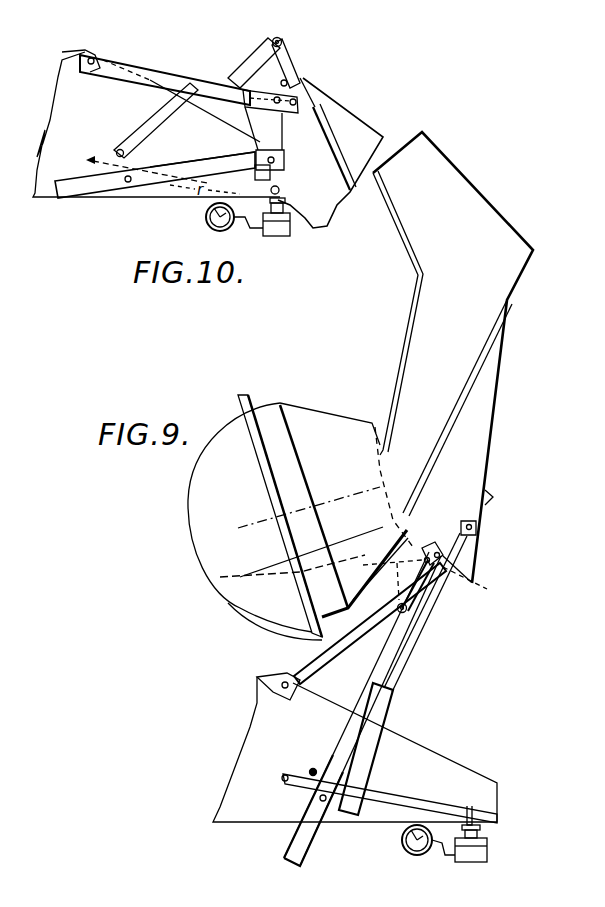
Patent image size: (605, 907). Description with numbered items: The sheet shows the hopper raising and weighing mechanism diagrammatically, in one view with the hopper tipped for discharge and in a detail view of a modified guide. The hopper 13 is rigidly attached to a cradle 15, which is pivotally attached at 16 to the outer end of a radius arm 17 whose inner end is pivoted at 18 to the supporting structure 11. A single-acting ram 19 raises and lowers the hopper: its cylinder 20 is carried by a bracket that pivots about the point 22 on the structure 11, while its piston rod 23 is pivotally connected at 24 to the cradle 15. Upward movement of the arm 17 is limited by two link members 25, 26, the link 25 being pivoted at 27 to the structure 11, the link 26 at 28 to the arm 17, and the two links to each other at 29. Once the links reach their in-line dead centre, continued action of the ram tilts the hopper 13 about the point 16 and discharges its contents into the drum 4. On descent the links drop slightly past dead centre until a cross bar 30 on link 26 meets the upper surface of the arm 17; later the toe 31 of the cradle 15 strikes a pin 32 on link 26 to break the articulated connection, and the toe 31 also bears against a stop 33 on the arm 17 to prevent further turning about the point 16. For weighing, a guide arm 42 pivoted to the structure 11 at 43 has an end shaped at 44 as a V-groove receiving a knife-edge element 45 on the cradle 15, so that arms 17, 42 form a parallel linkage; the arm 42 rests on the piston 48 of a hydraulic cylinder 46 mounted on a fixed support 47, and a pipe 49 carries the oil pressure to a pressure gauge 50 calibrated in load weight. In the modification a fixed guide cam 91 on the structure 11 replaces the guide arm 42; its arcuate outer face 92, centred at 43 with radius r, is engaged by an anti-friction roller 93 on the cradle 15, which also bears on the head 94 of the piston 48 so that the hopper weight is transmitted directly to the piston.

In FIG. 9, the drum 4 is at (215, 567).
In FIG. 10, the supporting structure 11 is at (60, 126).
In FIG. 9, the supporting structure 11 is at (403, 752).
In FIG. 10, the hopper 13 is at (340, 117).
In FIG. 9, the hopper 13 is at (513, 257).
In FIG. 10, the cradle 15 is at (325, 150).
In FIG. 10, the pivot point 16 is at (294, 106).
In FIG. 9, the pivot point 16 is at (440, 547).
In FIG. 10, the radius arm 17 is at (176, 82).
In FIG. 9, the radius arm 17 is at (333, 644).
In FIG. 10, the pivot point 18 is at (96, 56).
In FIG. 9, the pivot point 18 is at (262, 686).
In FIG. 10, the ram 19 is at (77, 192).
In FIG. 9, the ram 19 is at (352, 773).
In FIG. 9, the cylinder 20 is at (304, 854).
In FIG. 10, the pivot point 22 is at (128, 183).
In FIG. 9, the pivot point 22 is at (325, 801).
In FIG. 9, the piston rod 23 is at (410, 640).
In FIG. 10, the pivot point 24 is at (280, 161).
In FIG. 9, the pivot point 24 is at (478, 531).
In FIG. 10, the link member 25 is at (244, 66).
In FIG. 9, the link member 25 is at (386, 650).
In FIG. 10, the link member 26 is at (288, 68).
In FIG. 9, the link member 26 is at (410, 602).
In FIG. 10, the pivot point 27 is at (118, 151).
In FIG. 9, the pivot point 27 is at (310, 770).
In FIG. 10, the pivot point 28 is at (277, 103).
In FIG. 9, the pivot point 28 is at (427, 557).
In FIG. 10, the pivot point 29 is at (282, 38).
In FIG. 9, the pivot point 29 is at (407, 611).
In FIG. 9, the cross bar 30 is at (390, 562).
In FIG. 9, the toe 31 is at (463, 571).
In FIG. 10, the pin 32 is at (302, 78).
In FIG. 9, the pin 32 is at (476, 587).
In FIG. 10, the pin or stop 33 is at (248, 99).
In FIG. 9, the pin or stop 33 is at (380, 578).
In FIG. 9, the guide arm 42 is at (398, 805).
In FIG. 10, the pivot point 43 is at (133, 167).
In FIG. 9, the pivot point 43 is at (283, 781).
In FIG. 9, the V-groove 44 is at (472, 812).
In FIG. 9, the knife-edge element 45 is at (493, 497).
In FIG. 10, the hydraulic cylinder 46 is at (318, 226).
In FIG. 9, the hydraulic cylinder 46 is at (478, 833).
In FIG. 9, the fixed support 47 is at (478, 847).
In FIG. 10, the piston 48 is at (286, 200).
In FIG. 9, the piston 48 is at (481, 827).
In FIG. 9, the pipe 49 is at (446, 856).
In FIG. 10, the pressure gauge 50 is at (220, 232).
In FIG. 9, the pressure gauge 50 is at (414, 856).
In FIG. 10, the guide cam 91 is at (222, 158).
In FIG. 10, the outer face 92 is at (262, 177).
In FIG. 10, the anti-friction roller 93 is at (280, 189).
In FIG. 10, the head 94 is at (271, 207).